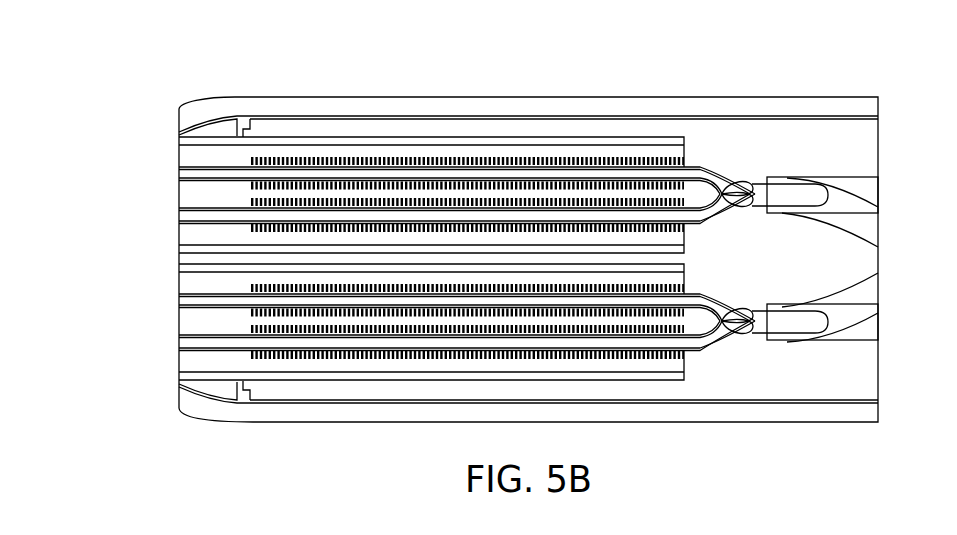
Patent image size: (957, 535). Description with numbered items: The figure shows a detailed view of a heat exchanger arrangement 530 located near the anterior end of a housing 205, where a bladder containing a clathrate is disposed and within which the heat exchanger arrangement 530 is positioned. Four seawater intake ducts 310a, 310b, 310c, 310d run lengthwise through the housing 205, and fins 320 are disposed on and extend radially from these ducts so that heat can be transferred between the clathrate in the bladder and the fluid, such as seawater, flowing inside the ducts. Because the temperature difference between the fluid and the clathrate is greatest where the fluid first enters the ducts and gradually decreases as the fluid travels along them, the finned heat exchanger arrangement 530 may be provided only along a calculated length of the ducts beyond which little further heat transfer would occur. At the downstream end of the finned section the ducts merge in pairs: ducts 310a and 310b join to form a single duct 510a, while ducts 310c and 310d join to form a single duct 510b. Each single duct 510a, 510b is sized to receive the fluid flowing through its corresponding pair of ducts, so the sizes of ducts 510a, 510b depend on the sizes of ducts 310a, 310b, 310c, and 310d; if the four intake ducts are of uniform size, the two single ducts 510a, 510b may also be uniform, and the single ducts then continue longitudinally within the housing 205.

The heat exchanger arrangement 530 is at (646, 84).
The housing 205 is at (795, 117).
The duct 310a is at (427, 338).
The duct 310b is at (427, 306).
The duct 310c is at (210, 219).
The duct 310d is at (210, 176).
The fins 320 is at (313, 162).
The single duct 510a is at (850, 311).
The single duct 510b is at (850, 216).